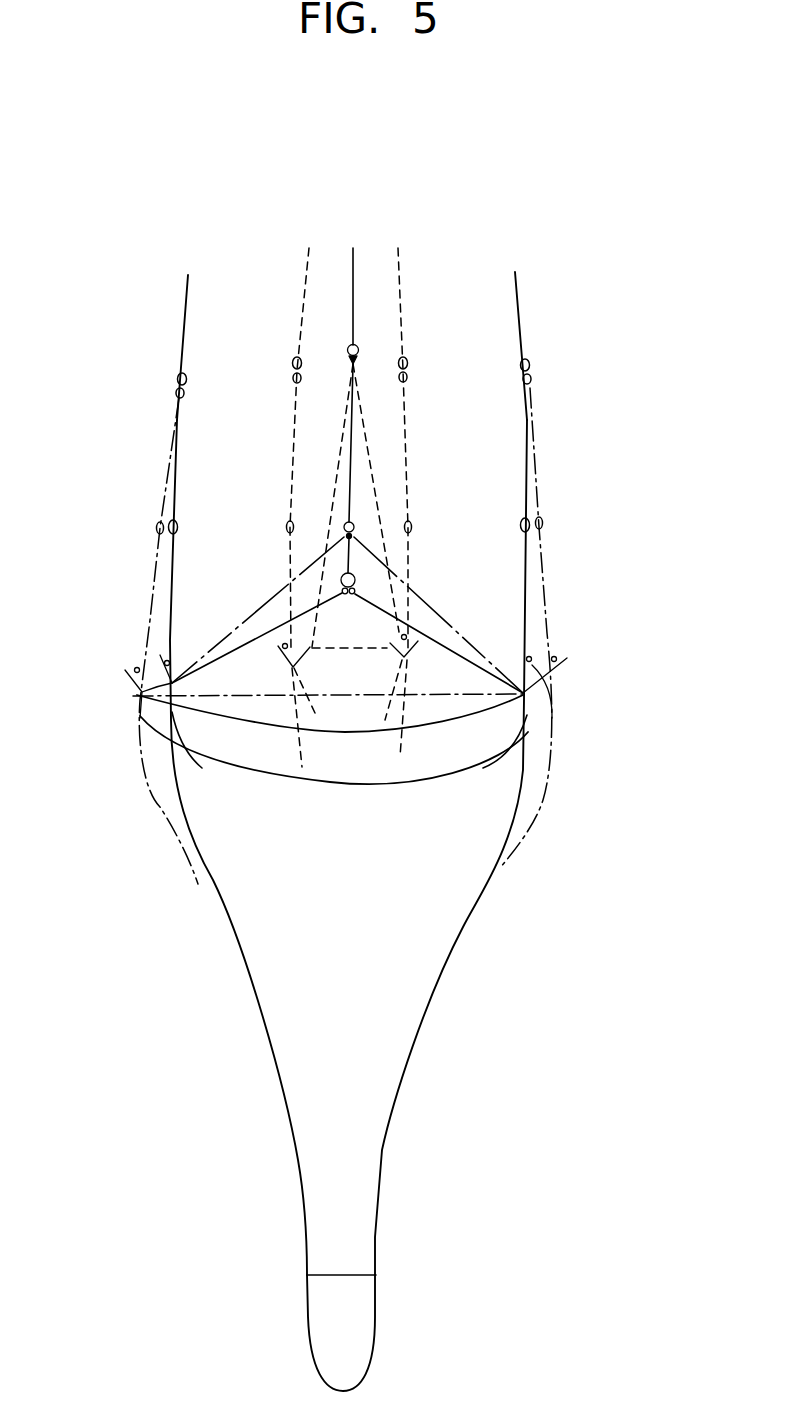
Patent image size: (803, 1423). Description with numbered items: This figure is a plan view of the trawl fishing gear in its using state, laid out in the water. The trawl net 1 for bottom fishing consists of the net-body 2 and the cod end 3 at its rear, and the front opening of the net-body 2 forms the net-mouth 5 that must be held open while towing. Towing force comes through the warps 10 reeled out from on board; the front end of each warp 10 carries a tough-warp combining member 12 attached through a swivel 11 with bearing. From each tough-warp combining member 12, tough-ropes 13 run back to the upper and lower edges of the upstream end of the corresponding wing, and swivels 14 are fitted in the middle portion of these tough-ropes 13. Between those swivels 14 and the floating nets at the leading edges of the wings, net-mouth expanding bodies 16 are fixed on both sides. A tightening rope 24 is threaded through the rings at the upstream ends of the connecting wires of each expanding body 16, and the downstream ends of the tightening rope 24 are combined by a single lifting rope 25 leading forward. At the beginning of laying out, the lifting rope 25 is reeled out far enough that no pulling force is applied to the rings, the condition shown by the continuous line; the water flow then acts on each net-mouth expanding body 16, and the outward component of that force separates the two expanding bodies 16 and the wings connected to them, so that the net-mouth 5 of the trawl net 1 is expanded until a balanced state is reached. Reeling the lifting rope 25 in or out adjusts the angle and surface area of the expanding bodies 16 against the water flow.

The trawl net 1 is at (438, 996).
The net-body 2 is at (413, 1044).
The cod end 3 is at (365, 1315).
The net-mouth 5 is at (347, 778).
The warp 10 is at (182, 311).
The swivel with bearing 11 is at (177, 378).
The tough-warp combining member 12 is at (175, 392).
The tough-rope 13 is at (176, 489).
The swivel 14 is at (168, 536).
The net-mouth expanding body 16 is at (143, 653).
The tightening rope 24 is at (337, 462).
The lifting rope 25 is at (354, 268).